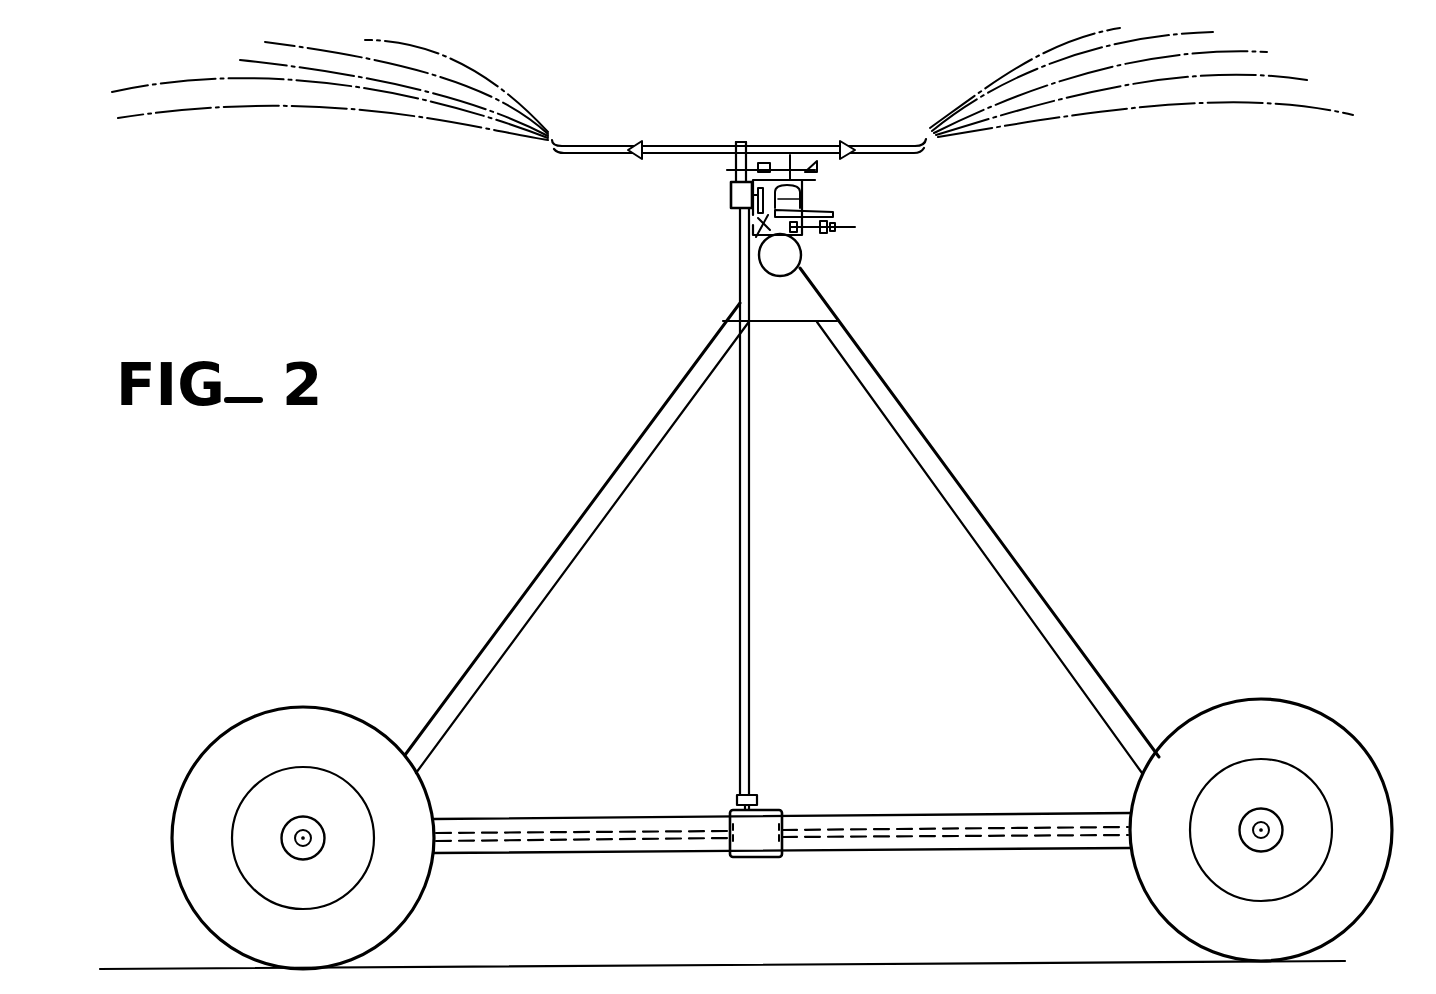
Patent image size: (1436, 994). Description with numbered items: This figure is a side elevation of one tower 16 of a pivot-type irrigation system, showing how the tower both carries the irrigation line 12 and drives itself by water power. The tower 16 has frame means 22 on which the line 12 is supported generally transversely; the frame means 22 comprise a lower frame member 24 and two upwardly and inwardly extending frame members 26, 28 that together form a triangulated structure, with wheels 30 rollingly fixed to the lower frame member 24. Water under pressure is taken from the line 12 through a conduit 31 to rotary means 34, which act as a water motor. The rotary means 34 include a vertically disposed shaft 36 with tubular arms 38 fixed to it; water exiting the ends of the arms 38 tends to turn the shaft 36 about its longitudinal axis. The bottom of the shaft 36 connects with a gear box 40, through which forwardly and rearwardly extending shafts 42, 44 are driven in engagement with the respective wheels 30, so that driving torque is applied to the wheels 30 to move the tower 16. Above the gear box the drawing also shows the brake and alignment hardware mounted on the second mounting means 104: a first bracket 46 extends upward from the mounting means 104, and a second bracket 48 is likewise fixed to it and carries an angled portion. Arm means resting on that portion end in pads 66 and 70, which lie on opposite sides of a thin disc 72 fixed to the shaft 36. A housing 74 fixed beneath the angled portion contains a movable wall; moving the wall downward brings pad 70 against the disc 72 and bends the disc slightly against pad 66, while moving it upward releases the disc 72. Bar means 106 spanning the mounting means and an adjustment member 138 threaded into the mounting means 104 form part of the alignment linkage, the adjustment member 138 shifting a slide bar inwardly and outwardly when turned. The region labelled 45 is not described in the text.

The line 12 is at (784, 288).
The tower 16 is at (979, 520).
The frame means 22 is at (1043, 580).
The lower frame member 24 is at (608, 817).
The frame member 26 is at (518, 618).
The frame member 28 is at (977, 546).
The wheels 30 is at (258, 728).
The conduit 31 is at (752, 215).
The rotary means 34 is at (716, 184).
The shaft 36 is at (751, 421).
The tubular arms 38 is at (679, 144).
The gear box 40 is at (770, 810).
The shaft 42 is at (525, 832).
The shaft 44 is at (920, 830).
The drive mechanism housing 45 is at (675, 228).
The first bracket 46 is at (820, 199).
The second bracket 48 is at (753, 240).
The arm means portion 66 is at (772, 178).
The arm means portion 70 is at (761, 162).
The thin disc 72 is at (727, 170).
The housing 74 is at (820, 188).
The second mounting means 104 is at (807, 228).
The bar means 106 is at (760, 218).
The adjustment member 138 is at (876, 229).